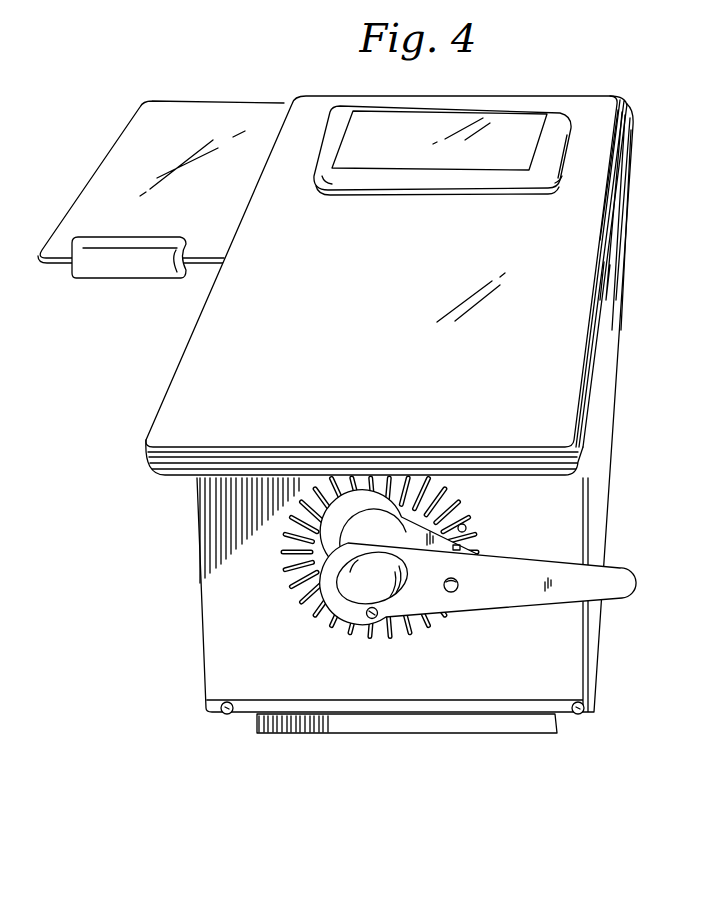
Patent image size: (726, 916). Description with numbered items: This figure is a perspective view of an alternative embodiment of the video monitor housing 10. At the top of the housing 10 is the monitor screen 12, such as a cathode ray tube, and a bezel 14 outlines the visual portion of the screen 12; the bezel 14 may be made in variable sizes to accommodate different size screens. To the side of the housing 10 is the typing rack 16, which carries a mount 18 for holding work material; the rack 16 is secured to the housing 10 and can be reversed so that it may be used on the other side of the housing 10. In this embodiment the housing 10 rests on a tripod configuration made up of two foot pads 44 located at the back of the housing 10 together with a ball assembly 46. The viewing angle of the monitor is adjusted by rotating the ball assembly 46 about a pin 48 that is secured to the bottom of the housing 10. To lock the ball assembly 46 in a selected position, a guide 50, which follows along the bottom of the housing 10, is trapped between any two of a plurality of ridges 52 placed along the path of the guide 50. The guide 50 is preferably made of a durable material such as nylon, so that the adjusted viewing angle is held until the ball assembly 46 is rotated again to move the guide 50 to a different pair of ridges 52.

The video monitor housing 10 is at (295, 335).
The monitor screen 12 is at (385, 151).
The bezel 14 is at (375, 183).
The typing rack 16 is at (190, 206).
The mount 18 is at (133, 262).
The foot pads 44 is at (588, 753).
The ball assembly 46 is at (328, 627).
The pin 48 is at (375, 620).
The guide 50 is at (470, 533).
The ridges 52 is at (294, 585).